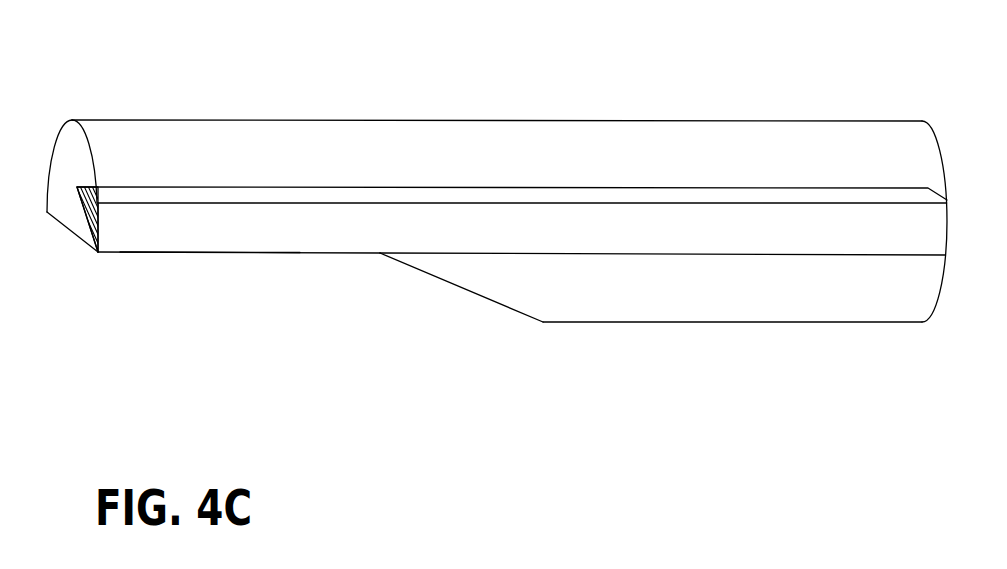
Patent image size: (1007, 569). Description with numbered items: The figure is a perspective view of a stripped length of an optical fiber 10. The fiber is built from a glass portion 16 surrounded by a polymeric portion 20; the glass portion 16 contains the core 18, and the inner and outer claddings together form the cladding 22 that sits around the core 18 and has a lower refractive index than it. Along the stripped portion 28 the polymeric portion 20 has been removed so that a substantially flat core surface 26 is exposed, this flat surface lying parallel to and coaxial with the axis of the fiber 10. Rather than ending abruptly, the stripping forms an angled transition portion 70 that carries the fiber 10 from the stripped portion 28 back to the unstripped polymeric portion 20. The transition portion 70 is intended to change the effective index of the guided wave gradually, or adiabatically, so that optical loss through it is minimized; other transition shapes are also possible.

The optical fiber 10 is at (489, 205).
The polymeric portion 20 is at (463, 142).
The cladding 22 is at (68, 140).
The core 18 is at (77, 213).
The core surface 26 is at (85, 245).
The stripped portion 28 is at (172, 272).
The glass portion 16 is at (298, 245).
The transition portion 70 is at (442, 278).